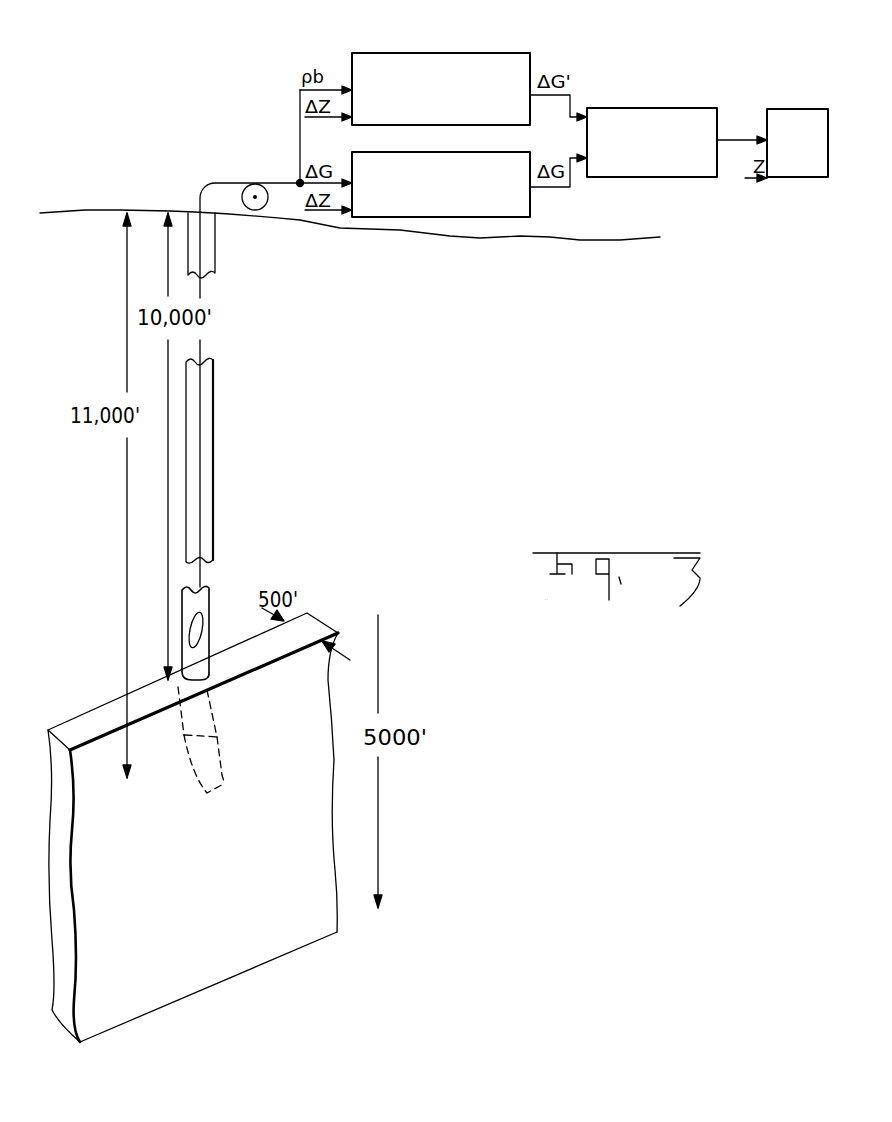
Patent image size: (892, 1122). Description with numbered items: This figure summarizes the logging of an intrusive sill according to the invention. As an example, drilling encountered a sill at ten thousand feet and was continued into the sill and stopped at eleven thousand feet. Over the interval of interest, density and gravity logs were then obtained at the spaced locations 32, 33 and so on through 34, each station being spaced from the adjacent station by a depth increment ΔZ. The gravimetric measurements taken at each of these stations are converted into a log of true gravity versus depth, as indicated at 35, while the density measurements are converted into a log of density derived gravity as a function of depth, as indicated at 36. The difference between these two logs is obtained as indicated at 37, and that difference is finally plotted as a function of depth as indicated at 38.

The spaced location 32 is at (228, 783).
The spaced location 33 is at (222, 736).
The spaced location 34 is at (213, 468).
The log of true gravity versus depth 35 is at (530, 208).
The log of density derived gravity 36 is at (518, 53).
The difference 37 is at (675, 108).
The plot 38 is at (787, 109).